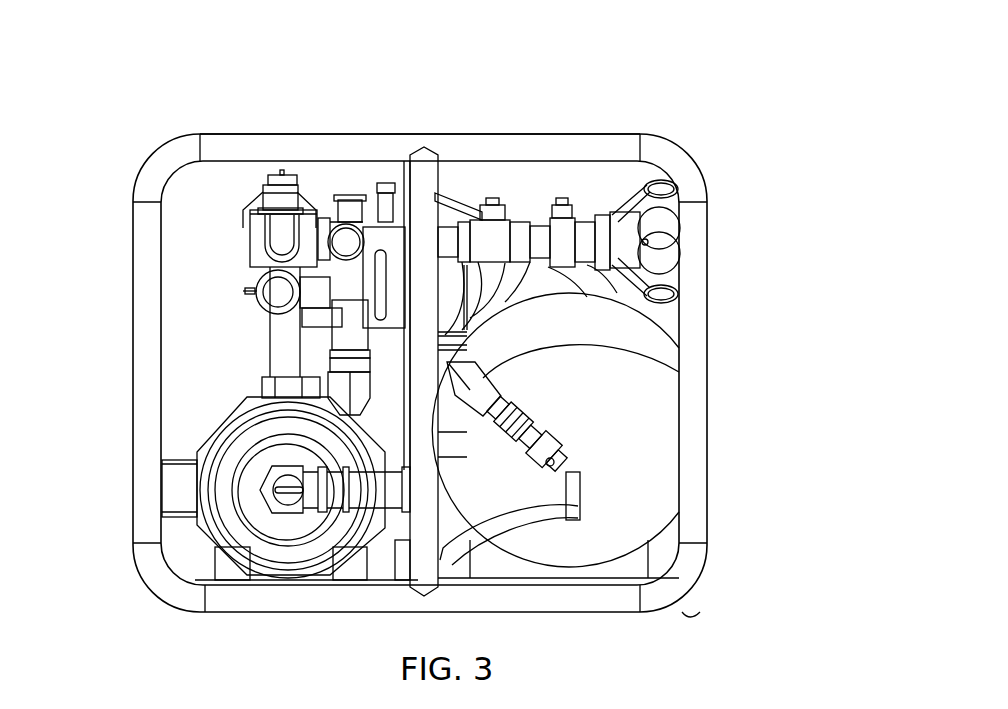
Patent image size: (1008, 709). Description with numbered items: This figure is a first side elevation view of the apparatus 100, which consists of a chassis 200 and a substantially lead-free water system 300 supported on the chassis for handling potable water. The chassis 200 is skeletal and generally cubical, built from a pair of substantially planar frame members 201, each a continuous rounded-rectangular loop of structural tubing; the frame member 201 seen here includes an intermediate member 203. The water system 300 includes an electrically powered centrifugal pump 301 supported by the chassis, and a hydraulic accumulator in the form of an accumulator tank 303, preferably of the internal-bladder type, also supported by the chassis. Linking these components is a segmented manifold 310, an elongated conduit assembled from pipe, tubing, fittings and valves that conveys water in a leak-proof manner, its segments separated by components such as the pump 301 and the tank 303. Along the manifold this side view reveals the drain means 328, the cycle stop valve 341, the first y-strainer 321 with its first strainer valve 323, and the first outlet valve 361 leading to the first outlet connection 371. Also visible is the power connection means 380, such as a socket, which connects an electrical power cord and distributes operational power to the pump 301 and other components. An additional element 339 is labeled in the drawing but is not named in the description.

The apparatus 100 is at (708, 126).
The chassis 200 is at (708, 222).
The frame member 201 is at (535, 133).
The intermediate member 203 is at (437, 186).
The water system 300 is at (265, 343).
The pump 301 is at (208, 442).
The accumulator tank 303 is at (643, 363).
The manifold 310 is at (267, 323).
The first y-strainer 321 is at (482, 383).
The first strainer valve 323 is at (563, 457).
The drain means 328 is at (290, 493).
The relief valve 339 is at (288, 195).
The cycle stop valve 341 is at (330, 373).
The first outlet valve 361 is at (522, 217).
The first outlet connection 371 is at (630, 248).
The power connection means 380 is at (175, 477).